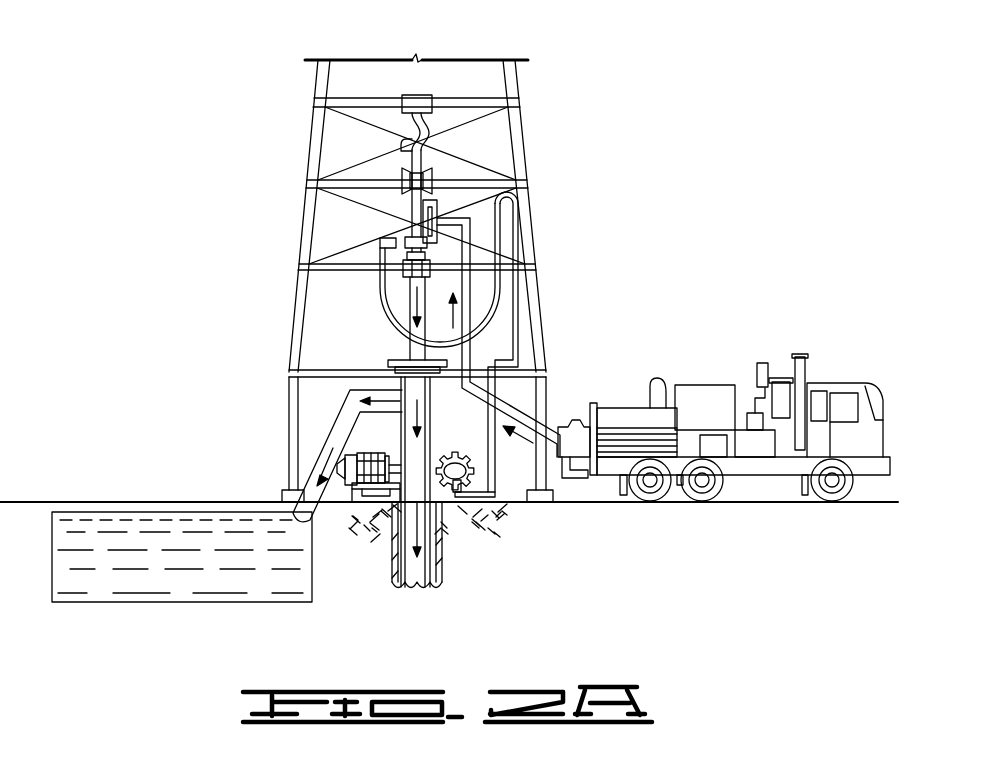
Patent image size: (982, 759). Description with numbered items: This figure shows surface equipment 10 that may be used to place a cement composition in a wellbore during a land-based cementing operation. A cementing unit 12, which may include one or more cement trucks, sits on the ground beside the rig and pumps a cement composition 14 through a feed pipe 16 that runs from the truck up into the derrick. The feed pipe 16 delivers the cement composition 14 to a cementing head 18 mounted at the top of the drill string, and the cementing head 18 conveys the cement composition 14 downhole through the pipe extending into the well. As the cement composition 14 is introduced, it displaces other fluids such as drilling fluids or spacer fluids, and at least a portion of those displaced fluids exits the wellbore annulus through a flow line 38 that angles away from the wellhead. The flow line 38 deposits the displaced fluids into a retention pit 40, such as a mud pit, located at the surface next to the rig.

The surface equipment 10 is at (733, 116).
The cementing unit 12 is at (745, 487).
The cement composition 14 is at (408, 302).
The feed pipe 16 is at (548, 408).
The cementing head 18 is at (452, 163).
The flow line 38 is at (330, 427).
The retention pit 40 is at (172, 602).